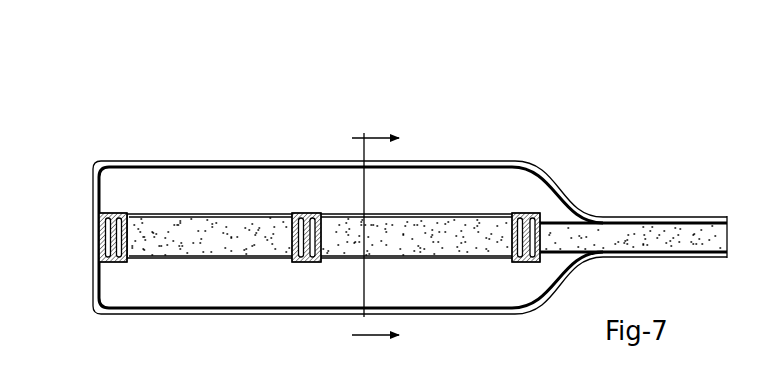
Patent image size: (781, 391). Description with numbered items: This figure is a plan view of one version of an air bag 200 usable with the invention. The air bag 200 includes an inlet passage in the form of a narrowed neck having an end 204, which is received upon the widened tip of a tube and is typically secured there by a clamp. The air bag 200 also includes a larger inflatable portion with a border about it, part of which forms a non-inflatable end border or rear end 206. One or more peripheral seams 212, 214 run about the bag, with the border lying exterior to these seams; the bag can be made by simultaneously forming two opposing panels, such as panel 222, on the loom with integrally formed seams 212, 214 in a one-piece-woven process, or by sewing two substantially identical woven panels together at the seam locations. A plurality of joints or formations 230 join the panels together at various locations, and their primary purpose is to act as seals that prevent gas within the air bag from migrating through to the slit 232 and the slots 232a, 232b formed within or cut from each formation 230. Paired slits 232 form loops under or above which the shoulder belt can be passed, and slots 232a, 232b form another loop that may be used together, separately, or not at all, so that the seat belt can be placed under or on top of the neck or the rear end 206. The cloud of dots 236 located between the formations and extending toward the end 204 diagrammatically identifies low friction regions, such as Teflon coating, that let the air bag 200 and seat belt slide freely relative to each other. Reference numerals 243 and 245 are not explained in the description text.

The air bag 200 is at (407, 98).
The end 204 is at (716, 225).
The non-inflatable end border 206 is at (92, 241).
The peripheral seam 212 is at (486, 311).
The peripheral seam 214 is at (574, 210).
The panel 222 is at (223, 296).
The formation 230 is at (330, 219).
The slit 232 is at (101, 213).
The slot 232a is at (513, 213).
The slot 232b is at (537, 213).
The cloud of dots 236 is at (170, 225).
The top wall 243 is at (418, 158).
The bottom wall 245 is at (436, 315).